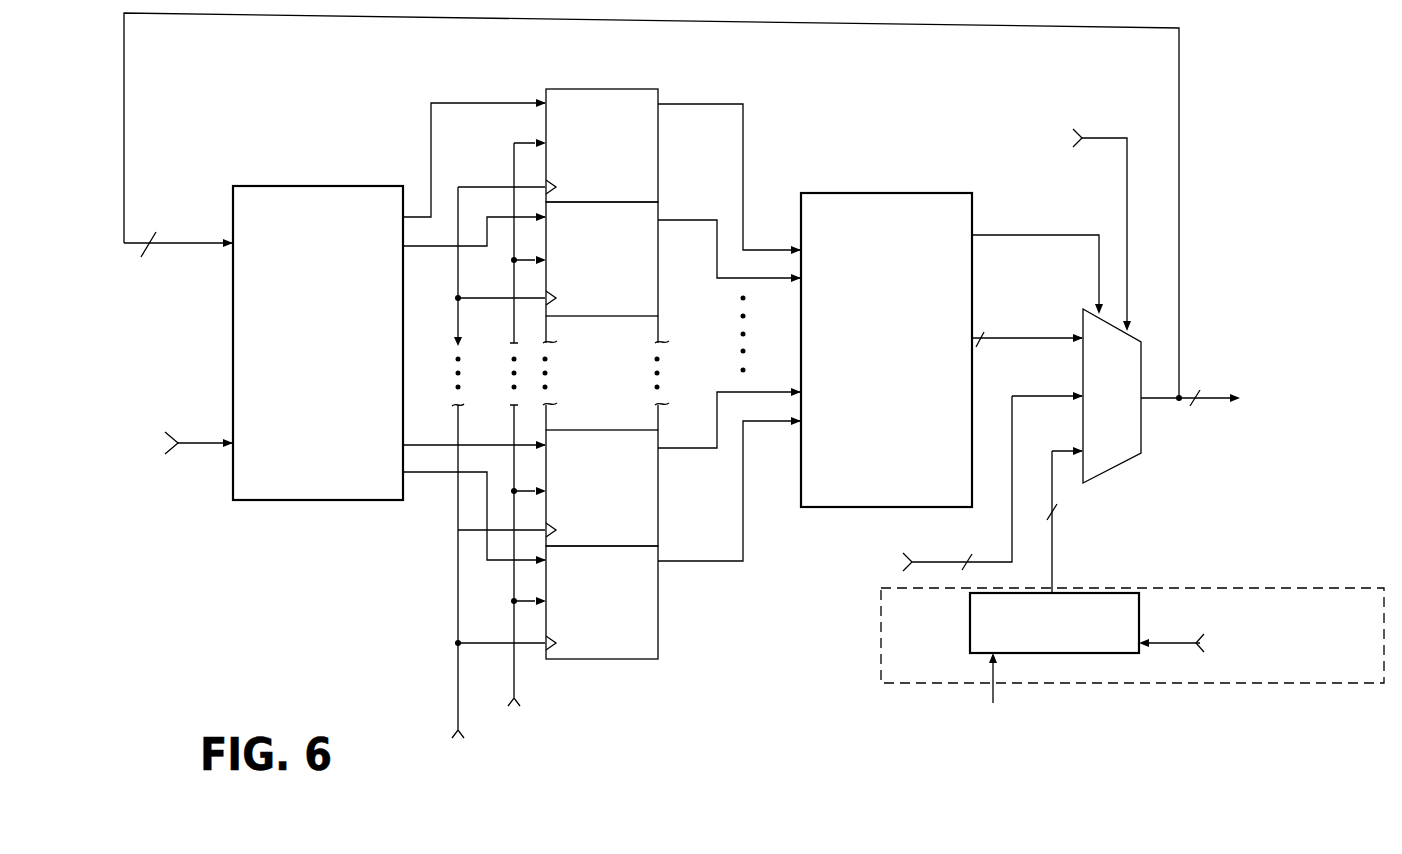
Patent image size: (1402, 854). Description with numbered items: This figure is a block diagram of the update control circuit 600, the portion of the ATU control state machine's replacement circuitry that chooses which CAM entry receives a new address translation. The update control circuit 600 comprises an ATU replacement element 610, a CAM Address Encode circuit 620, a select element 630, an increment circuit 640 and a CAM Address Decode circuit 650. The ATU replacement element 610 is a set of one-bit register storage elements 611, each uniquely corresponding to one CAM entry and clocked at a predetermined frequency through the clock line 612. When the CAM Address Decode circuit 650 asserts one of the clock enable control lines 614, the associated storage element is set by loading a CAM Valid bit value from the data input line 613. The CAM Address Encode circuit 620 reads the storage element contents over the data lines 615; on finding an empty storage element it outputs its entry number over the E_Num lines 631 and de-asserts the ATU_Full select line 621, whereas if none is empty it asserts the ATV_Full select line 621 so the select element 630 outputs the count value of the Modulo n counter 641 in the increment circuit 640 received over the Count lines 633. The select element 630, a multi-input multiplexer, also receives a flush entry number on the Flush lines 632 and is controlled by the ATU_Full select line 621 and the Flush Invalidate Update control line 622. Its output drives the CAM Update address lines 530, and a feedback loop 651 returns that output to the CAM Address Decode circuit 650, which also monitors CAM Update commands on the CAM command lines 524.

The update control circuit 600 is at (719, 388).
The feedback loop 651 is at (124, 82).
The CAM Address Decode circuit 650 is at (303, 512).
The CAM command lines 524 is at (196, 462).
The clock enable control lines 614 is at (480, 102).
The ATU replacement element 610 is at (634, 405).
The storage elements 611 is at (658, 157).
The clock line 612 is at (457, 686).
The data input line 613 is at (514, 680).
The data lines 615 is at (710, 104).
The CAM Address Encode circuit 620 is at (784, 477).
The ATU_Full select line 621 is at (1057, 235).
The Flush Invalidate Update control line 622 is at (1100, 138).
The E_Num lines 631 is at (1076, 304).
The Flush lines 632 is at (1052, 393).
The Count lines 633 is at (1053, 488).
The select element 630 is at (1154, 445).
The CAM Update address lines 530 is at (1210, 403).
The increment circuit 640 is at (1132, 665).
The Modulo n counter 641 is at (970, 614).